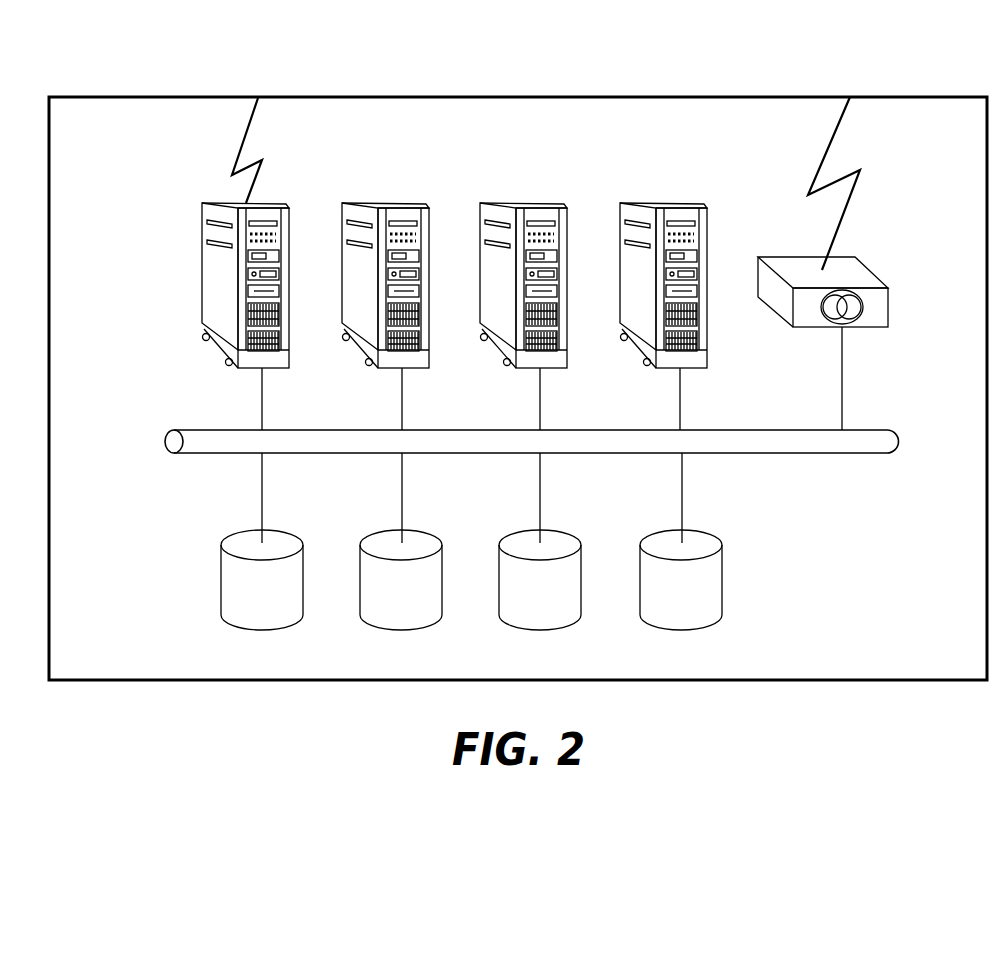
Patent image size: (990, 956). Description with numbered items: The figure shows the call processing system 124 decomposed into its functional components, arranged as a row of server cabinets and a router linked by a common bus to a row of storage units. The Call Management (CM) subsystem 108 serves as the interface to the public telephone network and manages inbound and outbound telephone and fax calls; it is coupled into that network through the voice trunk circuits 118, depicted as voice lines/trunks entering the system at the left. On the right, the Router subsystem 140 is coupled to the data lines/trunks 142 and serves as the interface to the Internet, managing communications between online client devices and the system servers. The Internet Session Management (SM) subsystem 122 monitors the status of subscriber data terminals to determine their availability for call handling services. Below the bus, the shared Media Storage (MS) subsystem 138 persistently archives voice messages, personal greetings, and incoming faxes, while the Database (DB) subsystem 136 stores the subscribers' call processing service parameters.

The call processing system 124 is at (450, 97).
The voice trunk circuits 118 is at (247, 129).
The Call Management (CM) subsystem 108 is at (220, 270).
The Internet Session Management (SM) subsystem 122 is at (703, 318).
The data lines/trunks 142 is at (835, 137).
The Router subsystem 140 is at (890, 302).
The Media Storage (MS) subsystem 138 is at (232, 573).
The Database (DB) subsystem 136 is at (708, 583).